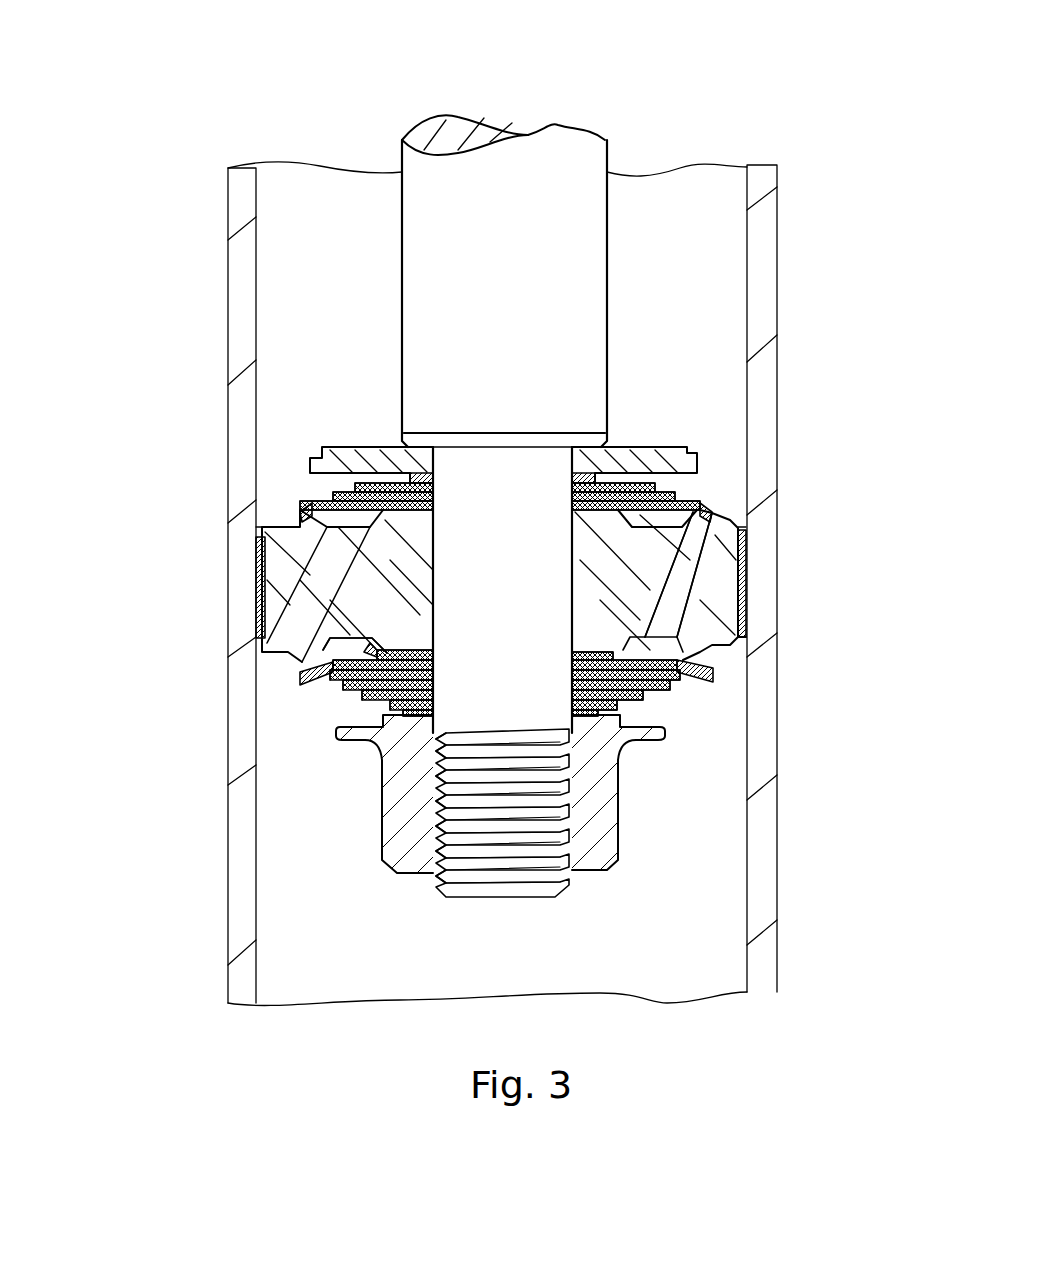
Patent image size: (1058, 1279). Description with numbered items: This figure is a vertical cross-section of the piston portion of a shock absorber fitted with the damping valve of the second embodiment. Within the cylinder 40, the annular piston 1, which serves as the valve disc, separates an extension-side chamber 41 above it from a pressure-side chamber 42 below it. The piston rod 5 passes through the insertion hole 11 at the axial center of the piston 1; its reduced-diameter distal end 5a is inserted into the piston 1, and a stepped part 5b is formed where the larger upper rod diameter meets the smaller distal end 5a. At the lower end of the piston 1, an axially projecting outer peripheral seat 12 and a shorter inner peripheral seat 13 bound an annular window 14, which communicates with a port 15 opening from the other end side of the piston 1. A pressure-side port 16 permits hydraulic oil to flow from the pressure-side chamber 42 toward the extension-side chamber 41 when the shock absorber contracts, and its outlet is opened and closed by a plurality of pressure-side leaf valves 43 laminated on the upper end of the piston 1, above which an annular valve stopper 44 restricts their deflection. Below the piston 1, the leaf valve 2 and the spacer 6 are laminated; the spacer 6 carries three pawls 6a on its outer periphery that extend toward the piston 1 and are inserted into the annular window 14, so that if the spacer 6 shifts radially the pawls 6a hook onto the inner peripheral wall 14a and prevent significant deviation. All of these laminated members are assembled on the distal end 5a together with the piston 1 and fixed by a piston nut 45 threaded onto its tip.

The piston 1 is at (751, 531).
The leaf valve 2 is at (314, 693).
The piston rod 5 is at (611, 202).
The distal end 5a is at (450, 547).
The stepped part 5b is at (410, 460).
The spacer 6 is at (398, 647).
The pawls 6a is at (327, 657).
The insertion hole 11 is at (552, 573).
The outer peripheral seat 12 is at (320, 672).
The inner peripheral seat 13 is at (620, 745).
The annular window 14 is at (677, 637).
The inner peripheral wall 14a is at (600, 700).
The port 15 is at (687, 583).
The pressure-side port 16 is at (327, 570).
The cylinder 40 is at (763, 250).
The extension-side chamber 41 is at (687, 205).
The pressure-side chamber 42 is at (333, 910).
The pressure-side leaf valves 43 is at (715, 497).
The valve stopper 44 is at (706, 452).
The piston nut 45 is at (610, 843).